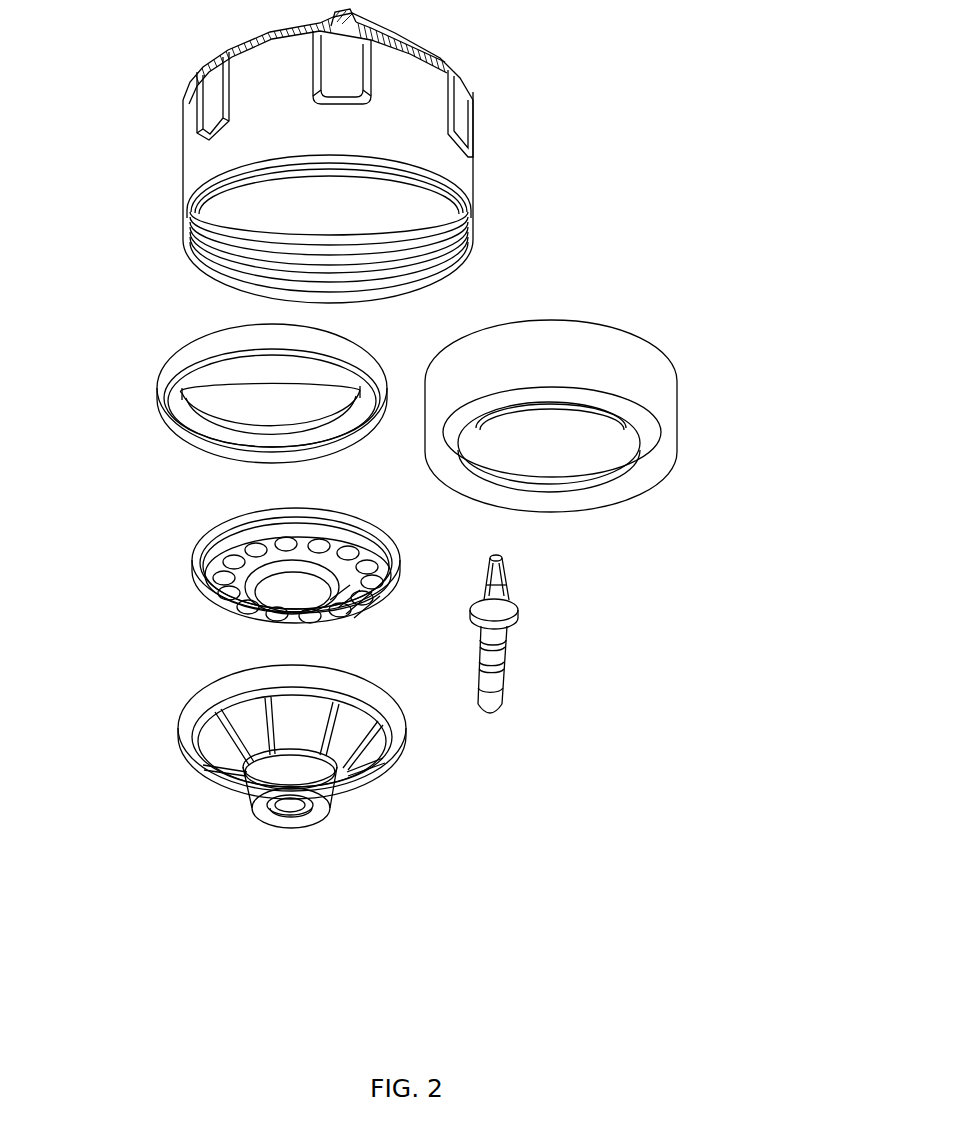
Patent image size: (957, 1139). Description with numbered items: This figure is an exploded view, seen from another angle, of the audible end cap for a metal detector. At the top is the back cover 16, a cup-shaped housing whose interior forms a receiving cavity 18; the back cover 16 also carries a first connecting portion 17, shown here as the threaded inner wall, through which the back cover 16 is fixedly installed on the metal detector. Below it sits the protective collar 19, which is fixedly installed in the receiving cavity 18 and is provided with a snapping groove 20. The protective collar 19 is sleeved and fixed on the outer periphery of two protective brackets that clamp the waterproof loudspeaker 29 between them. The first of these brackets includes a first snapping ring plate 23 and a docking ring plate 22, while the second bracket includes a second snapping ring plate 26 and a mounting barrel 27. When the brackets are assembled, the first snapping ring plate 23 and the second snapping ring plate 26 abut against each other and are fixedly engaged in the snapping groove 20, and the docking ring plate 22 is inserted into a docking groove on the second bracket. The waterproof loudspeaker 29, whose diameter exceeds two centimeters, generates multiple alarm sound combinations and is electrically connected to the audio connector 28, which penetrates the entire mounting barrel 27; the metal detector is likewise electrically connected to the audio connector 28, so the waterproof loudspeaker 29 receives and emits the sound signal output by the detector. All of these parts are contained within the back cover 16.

The back cover 16 is at (415, 124).
The first connecting portion 17 is at (462, 257).
The receiving cavity 18 is at (320, 203).
The protective collar 19 is at (600, 372).
The snapping groove 20 is at (558, 463).
The docking ring plate 22 is at (170, 380).
The first snapping ring plate 23 is at (198, 351).
The second snapping ring plate 26 is at (232, 687).
The mounting barrel 27 is at (325, 800).
The audio connector 28 is at (513, 618).
The waterproof loudspeaker 29 is at (225, 560).